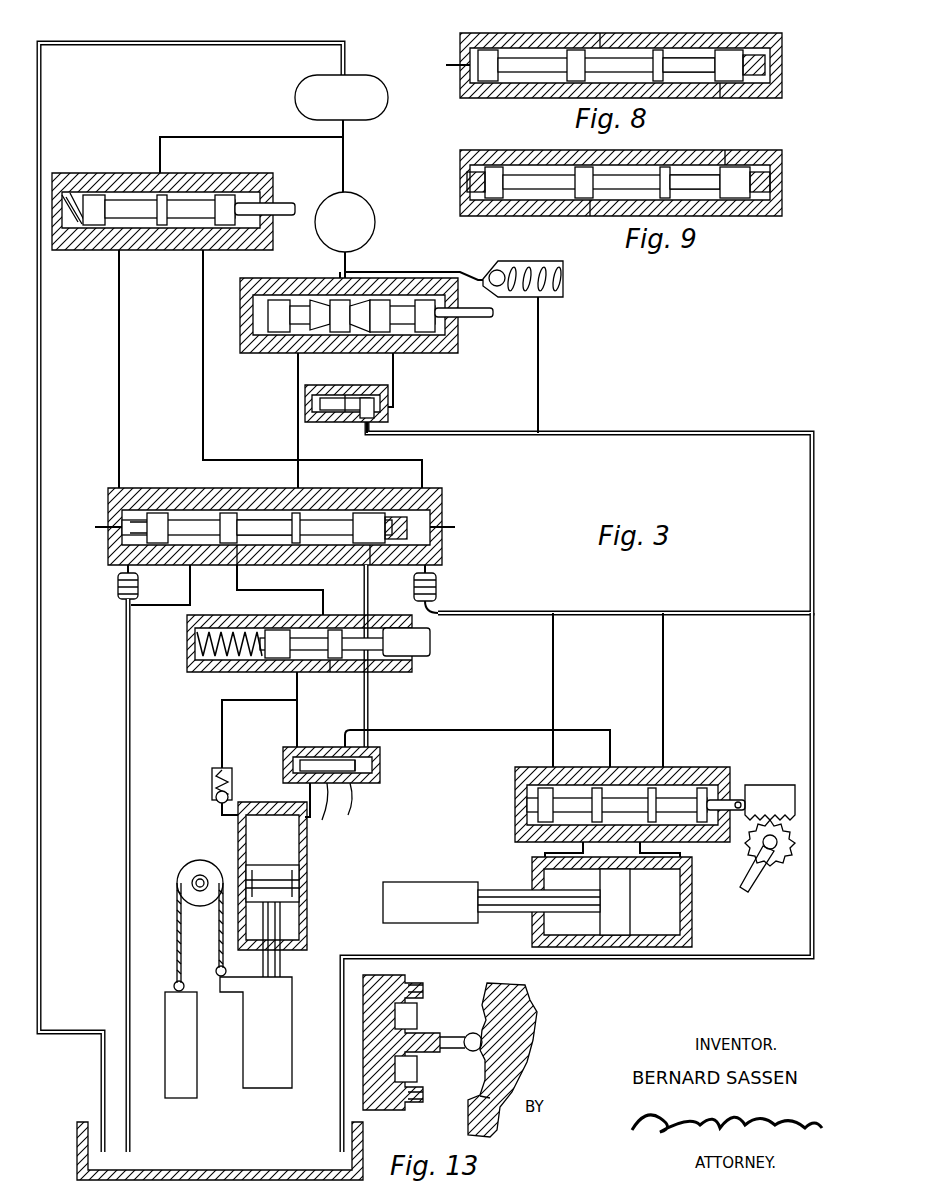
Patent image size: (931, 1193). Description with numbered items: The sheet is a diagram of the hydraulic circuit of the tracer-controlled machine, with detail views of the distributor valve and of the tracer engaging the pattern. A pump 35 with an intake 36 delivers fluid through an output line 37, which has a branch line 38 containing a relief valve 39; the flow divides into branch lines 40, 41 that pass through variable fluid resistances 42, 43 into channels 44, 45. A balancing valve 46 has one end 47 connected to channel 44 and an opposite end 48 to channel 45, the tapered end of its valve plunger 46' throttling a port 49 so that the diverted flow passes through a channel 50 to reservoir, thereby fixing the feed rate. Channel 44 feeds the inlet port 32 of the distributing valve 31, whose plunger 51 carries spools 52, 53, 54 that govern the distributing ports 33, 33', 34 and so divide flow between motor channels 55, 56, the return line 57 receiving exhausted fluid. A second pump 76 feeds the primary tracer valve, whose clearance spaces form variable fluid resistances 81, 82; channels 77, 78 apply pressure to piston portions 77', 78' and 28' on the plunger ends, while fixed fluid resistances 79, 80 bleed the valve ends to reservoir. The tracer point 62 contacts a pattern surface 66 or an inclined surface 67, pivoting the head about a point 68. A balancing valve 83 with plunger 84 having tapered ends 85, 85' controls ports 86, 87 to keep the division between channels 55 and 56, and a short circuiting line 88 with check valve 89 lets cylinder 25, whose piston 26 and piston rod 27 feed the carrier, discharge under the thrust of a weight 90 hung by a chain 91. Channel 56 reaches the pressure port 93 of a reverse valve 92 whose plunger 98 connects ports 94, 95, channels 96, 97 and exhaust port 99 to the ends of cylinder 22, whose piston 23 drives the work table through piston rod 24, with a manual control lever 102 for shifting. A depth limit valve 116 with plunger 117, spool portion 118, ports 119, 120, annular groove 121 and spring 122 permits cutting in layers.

In FIG. 3, the cylinder 22 is at (692, 925).
In FIG. 3, the piston 23 is at (628, 920).
In FIG. 3, the piston rod 24 is at (455, 923).
In FIG. 3, the cylinder 25 is at (248, 138).
In FIG. 3, the piston 26 is at (298, 893).
In FIG. 3, the piston rod 27 is at (292, 1012).
In FIG. 8, the piston portion 28' is at (780, 54).
In FIG. 9, the piston portion 28' is at (783, 179).
In FIG. 3, the distributing valve 31 is at (170, 512).
In FIG. 8, the inlet port 32 is at (680, 45).
In FIG. 9, the inlet port 32 is at (678, 160).
In FIG. 3, the inlet port 32 is at (305, 512).
In FIG. 8, the distributing port 33 is at (605, 27).
In FIG. 3, the distributing port 33 is at (218, 572).
In FIG. 9, the distributing port 33' is at (580, 221).
In FIG. 8, the distributing port 34 is at (722, 98).
In FIG. 9, the distributing port 34 is at (730, 165).
In FIG. 3, the distributing port 34 is at (370, 568).
In FIG. 3, the pump 35 is at (376, 225).
In FIG. 3, the intake 36 is at (345, 182).
In FIG. 3, the output line 37 is at (335, 268).
In FIG. 3, the branch line 38 is at (450, 270).
In FIG. 3, the relief valve 39 is at (563, 290).
In FIG. 3, the branch line 40 is at (340, 278).
In FIG. 3, the branch line 41 is at (345, 298).
In FIG. 3, the variable fluid resistance 42 is at (305, 295).
In FIG. 3, the variable fluid resistance 43 is at (375, 297).
In FIG. 3, the channel 44 is at (298, 376).
In FIG. 3, the channel 45 is at (393, 378).
In FIG. 3, the balancing valve 46 is at (346, 414).
In FIG. 3, the valve plunger 46' is at (352, 387).
In FIG. 3, the end of balancing valve 47 is at (333, 395).
In FIG. 3, the end of balancing valve 48 is at (380, 410).
In FIG. 3, the port 49 is at (365, 428).
In FIG. 3, the channel 50 is at (578, 437).
In FIG. 8, the plunger 51 is at (505, 55).
In FIG. 9, the plunger 51 is at (510, 172).
In FIG. 3, the plunger 51 is at (195, 490).
In FIG. 8, the spool 52 is at (576, 50).
In FIG. 9, the spool 52 is at (583, 170).
In FIG. 3, the spool 52 is at (228, 512).
In FIG. 8, the spool 53 is at (658, 50).
In FIG. 9, the spool 53 is at (664, 167).
In FIG. 3, the spool 53 is at (265, 512).
In FIG. 8, the spool 54 is at (730, 52).
In FIG. 9, the spool 54 is at (738, 205).
In FIG. 3, the spool 54 is at (372, 515).
In FIG. 3, the motor channel 55 is at (240, 592).
In FIG. 3, the motor channel 56 is at (364, 584).
In FIG. 3, the return line 57 is at (190, 584).
In FIG. 13, the tracer point 62 is at (476, 1033).
In FIG. 13, the pattern surface 66 is at (487, 1070).
In FIG. 13, the inclined surface 67 is at (480, 1097).
In FIG. 13, the pivot point 68 is at (396, 1080).
In FIG. 3, the pump 76 is at (375, 118).
In FIG. 3, the channel 77 is at (100, 369).
In FIG. 8, the piston portion 77' is at (449, 64).
In FIG. 9, the piston portion 77' is at (456, 183).
In FIG. 3, the piston portion 77' is at (93, 526).
In FIG. 3, the channel 78 is at (297, 369).
In FIG. 3, the piston portion 78' is at (458, 522).
In FIG. 3, the fixed fluid resistance 79 is at (118, 584).
In FIG. 3, the fixed fluid resistance 80 is at (440, 588).
In FIG. 3, the variable fluid resistance 81 is at (120, 192).
In FIG. 3, the variable fluid resistance 82 is at (185, 192).
In FIG. 3, the balancing valve 83 is at (361, 807).
In FIG. 3, the plunger 84 is at (328, 757).
In FIG. 3, the tapered end 85 is at (348, 725).
In FIG. 3, the tapered end 85' is at (334, 812).
In FIG. 3, the port 86 is at (360, 783).
In FIG. 3, the port 87 is at (305, 793).
In FIG. 3, the short circuiting line 88 is at (222, 733).
In FIG. 3, the check valve 89 is at (214, 804).
In FIG. 3, the weight 90 is at (188, 1065).
In FIG. 3, the chain 91 is at (177, 930).
In FIG. 3, the reverse valve 92 is at (648, 770).
In FIG. 3, the pressure port 93 is at (630, 785).
In FIG. 3, the port 94 is at (590, 785).
In FIG. 3, the port 95 is at (650, 767).
In FIG. 3, the channel 96 is at (545, 855).
In FIG. 3, the channel 97 is at (682, 855).
In FIG. 3, the plunger 98 is at (700, 768).
In FIG. 3, the exhaust port 99 is at (670, 790).
In FIG. 3, the manual control lever 102 is at (752, 880).
In FIG. 3, the depth limit valve 116 is at (285, 628).
In FIG. 3, the plunger 117 is at (412, 645).
In FIG. 3, the spool portion 118 is at (330, 672).
In FIG. 3, the port 119 is at (330, 628).
In FIG. 3, the port 120 is at (290, 672).
In FIG. 3, the annular groove 121 is at (368, 628).
In FIG. 3, the spring 122 is at (187, 644).